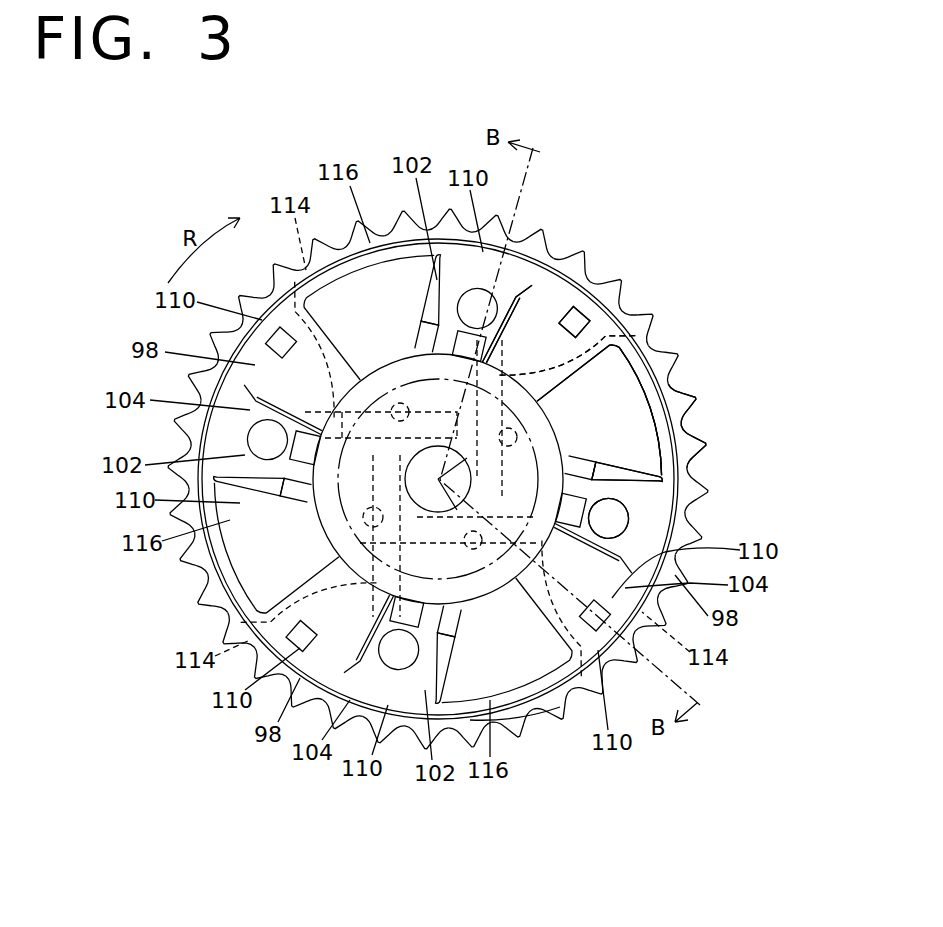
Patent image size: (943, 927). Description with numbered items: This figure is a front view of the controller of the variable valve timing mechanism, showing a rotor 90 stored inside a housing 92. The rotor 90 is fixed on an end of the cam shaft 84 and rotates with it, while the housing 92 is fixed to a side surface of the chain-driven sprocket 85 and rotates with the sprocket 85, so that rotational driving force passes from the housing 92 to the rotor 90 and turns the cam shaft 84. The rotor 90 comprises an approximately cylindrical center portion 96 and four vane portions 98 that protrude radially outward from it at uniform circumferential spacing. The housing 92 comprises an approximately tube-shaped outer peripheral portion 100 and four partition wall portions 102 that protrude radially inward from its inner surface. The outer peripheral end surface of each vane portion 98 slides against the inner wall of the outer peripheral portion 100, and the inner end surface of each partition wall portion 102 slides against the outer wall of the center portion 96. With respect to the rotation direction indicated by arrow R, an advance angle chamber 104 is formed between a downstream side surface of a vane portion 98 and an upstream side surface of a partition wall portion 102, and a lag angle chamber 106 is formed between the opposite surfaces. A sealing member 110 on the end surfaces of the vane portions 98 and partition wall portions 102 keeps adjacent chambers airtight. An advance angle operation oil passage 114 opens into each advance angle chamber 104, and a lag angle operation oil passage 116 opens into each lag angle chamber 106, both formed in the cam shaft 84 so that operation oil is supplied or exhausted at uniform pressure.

The cam shaft 84 is at (552, 692).
The sprocket 85 is at (715, 440).
The rotor 90 is at (623, 317).
The housing 92 is at (670, 340).
The center portion 96 is at (555, 420).
The vane portion 98 is at (570, 280).
The outer peripheral portion 100 is at (690, 388).
The partition wall portion 102 is at (632, 493).
The advance angle chamber 104 is at (520, 265).
The lag angle chamber 106 is at (591, 446).
The sealing member 110 is at (578, 320).
The advance angle operation oil passage 114 is at (637, 337).
The lag angle operation oil passage 116 is at (660, 471).